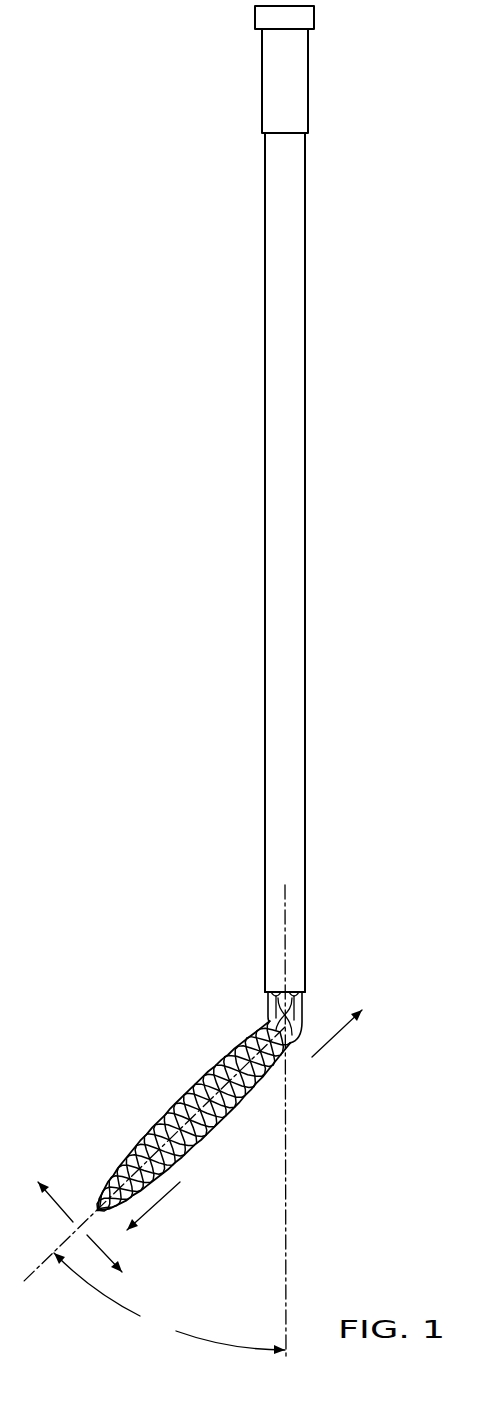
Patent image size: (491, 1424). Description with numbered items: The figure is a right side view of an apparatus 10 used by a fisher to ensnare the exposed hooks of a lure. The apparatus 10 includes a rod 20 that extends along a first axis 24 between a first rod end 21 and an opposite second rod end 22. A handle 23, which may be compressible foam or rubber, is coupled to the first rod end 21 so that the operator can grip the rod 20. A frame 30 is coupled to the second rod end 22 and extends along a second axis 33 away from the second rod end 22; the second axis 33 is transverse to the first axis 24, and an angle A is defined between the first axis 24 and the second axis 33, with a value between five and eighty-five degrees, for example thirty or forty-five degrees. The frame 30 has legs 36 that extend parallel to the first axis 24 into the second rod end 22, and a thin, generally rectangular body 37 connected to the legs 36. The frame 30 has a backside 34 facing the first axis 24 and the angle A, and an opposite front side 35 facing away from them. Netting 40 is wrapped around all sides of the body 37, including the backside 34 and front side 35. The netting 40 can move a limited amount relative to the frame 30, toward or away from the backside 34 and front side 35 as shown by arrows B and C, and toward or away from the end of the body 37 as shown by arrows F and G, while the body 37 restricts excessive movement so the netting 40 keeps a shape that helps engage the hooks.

The apparatus 10 is at (202, 497).
The rod 20 is at (293, 379).
The first rod end 21 is at (242, 76).
The handle 23 is at (293, 94).
The second rod end 22 is at (327, 940).
The legs 36 is at (302, 1002).
The frame 30 is at (203, 1092).
The front side 35 is at (147, 1103).
The backside 34 is at (228, 1138).
The body 37 is at (233, 1108).
The netting 40 is at (257, 1088).
The first axis 24 is at (287, 1238).
The second axis 33 is at (34, 1270).
The angle A is at (169, 1303).
The arrow B is at (103, 1250).
The arrow C is at (57, 1206).
The arrow F is at (157, 1204).
The arrow G is at (337, 1040).